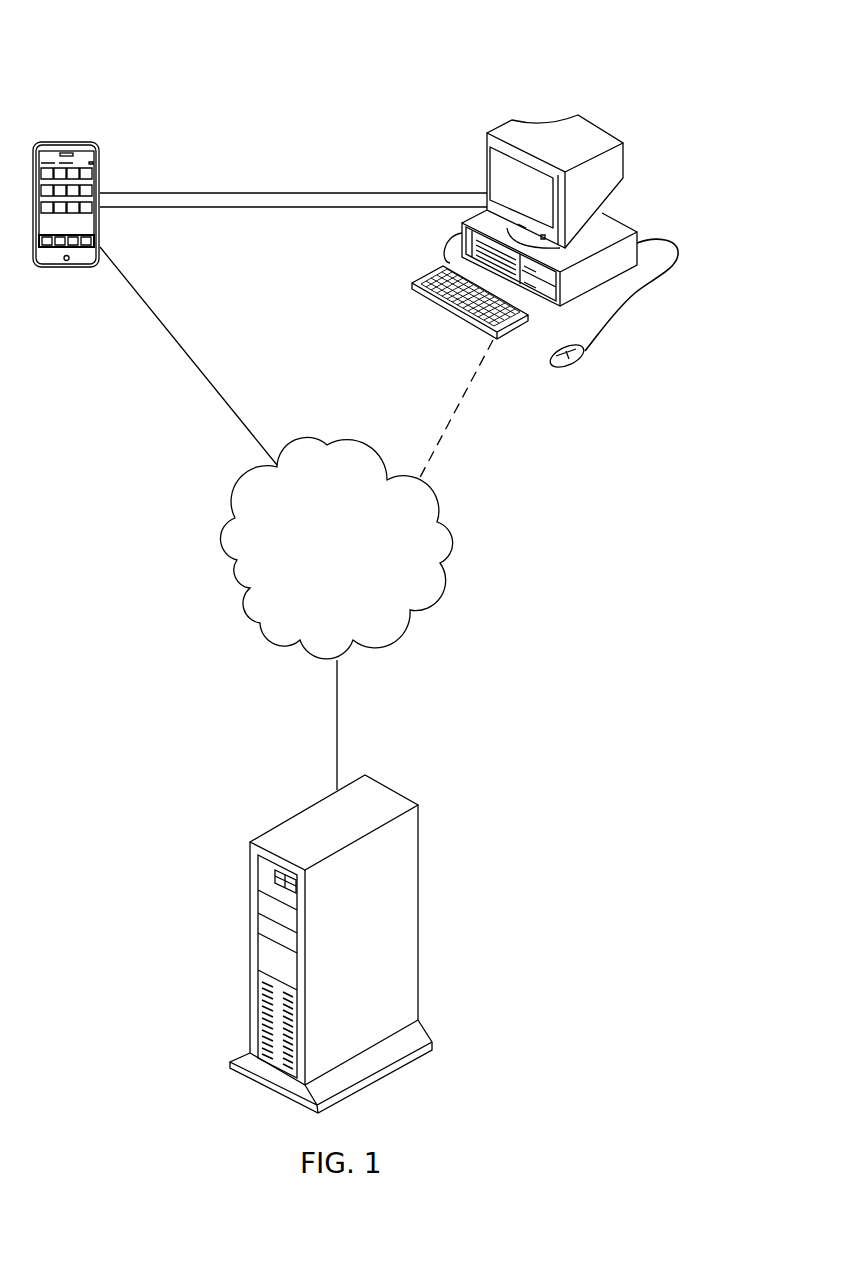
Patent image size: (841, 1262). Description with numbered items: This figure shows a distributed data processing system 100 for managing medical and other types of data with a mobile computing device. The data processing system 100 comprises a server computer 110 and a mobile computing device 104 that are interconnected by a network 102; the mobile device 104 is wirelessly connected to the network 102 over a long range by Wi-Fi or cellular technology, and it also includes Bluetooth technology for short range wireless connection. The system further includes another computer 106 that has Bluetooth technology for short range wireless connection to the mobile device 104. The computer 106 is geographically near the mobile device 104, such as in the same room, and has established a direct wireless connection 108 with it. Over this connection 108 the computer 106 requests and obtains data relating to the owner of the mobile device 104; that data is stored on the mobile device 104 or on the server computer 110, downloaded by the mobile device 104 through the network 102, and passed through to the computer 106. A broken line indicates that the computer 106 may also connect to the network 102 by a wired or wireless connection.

The data processing system 100 is at (423, 74).
The network 102 is at (349, 590).
The mobile computing device 104 is at (66, 270).
The computer 106 is at (624, 158).
The direct wireless connection 108 is at (305, 193).
The server computer 110 is at (419, 935).